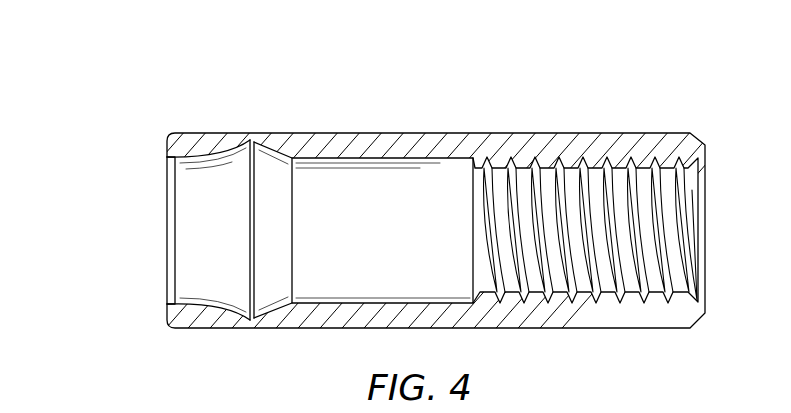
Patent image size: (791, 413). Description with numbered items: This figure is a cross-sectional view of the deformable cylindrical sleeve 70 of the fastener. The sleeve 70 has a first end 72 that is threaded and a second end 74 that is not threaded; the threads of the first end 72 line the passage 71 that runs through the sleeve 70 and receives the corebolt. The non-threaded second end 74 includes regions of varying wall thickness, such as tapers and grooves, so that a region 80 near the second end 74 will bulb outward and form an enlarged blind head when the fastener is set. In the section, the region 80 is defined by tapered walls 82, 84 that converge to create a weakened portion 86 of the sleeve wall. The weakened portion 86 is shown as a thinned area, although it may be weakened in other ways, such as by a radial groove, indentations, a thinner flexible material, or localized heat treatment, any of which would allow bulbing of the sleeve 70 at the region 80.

The cylindrical sleeve 70 is at (129, 111).
The passage 71 is at (428, 162).
The first end 72 is at (606, 143).
The second end 74 is at (320, 145).
The region 80 is at (252, 138).
The tapered wall 82 is at (225, 148).
The tapered wall 84 is at (272, 148).
The weakened portion 86 is at (236, 318).